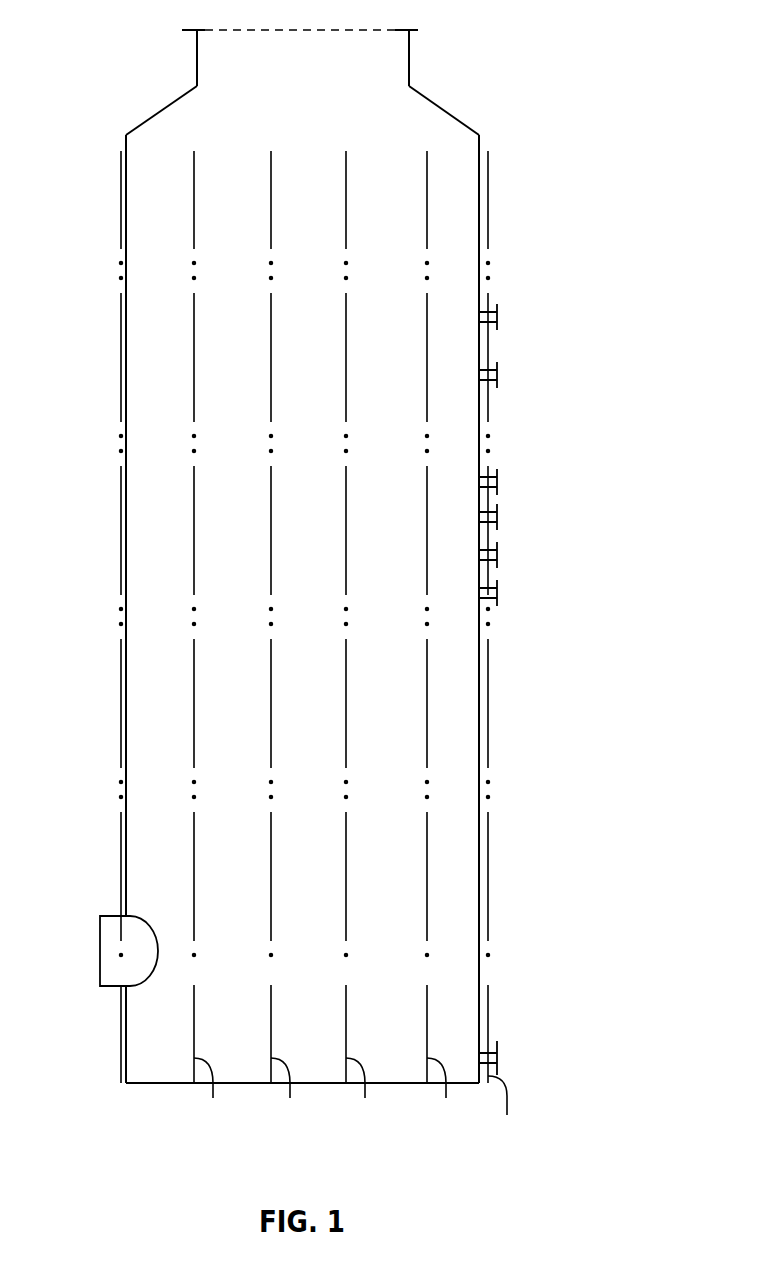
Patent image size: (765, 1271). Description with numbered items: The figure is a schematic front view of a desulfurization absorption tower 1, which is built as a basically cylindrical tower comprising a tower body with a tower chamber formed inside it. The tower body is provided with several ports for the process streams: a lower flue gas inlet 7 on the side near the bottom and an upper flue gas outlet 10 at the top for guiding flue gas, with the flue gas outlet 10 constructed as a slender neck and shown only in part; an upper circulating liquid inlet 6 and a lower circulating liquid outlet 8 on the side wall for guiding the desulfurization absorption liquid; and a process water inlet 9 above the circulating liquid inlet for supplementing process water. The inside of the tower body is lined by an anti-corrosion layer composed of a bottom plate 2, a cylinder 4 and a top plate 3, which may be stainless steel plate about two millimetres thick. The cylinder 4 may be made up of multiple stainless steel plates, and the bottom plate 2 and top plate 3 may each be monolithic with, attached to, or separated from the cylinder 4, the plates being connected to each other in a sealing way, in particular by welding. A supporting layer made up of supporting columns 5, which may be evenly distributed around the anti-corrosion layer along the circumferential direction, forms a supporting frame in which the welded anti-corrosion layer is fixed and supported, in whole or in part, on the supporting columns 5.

The desulfurization absorption tower 1 is at (315, 706).
The bottom plate 2 is at (168, 1085).
The top plate 3 is at (425, 95).
The cylinder 4 is at (126, 873).
The supporting columns 5 is at (355, 1104).
The upper circulating liquid inlet 6 is at (498, 481).
The lower flue gas inlet 7 is at (100, 957).
The lower circulating liquid outlet 8 is at (500, 1057).
The process water inlet 9 is at (498, 317).
The upper flue gas outlet 10 is at (418, 31).